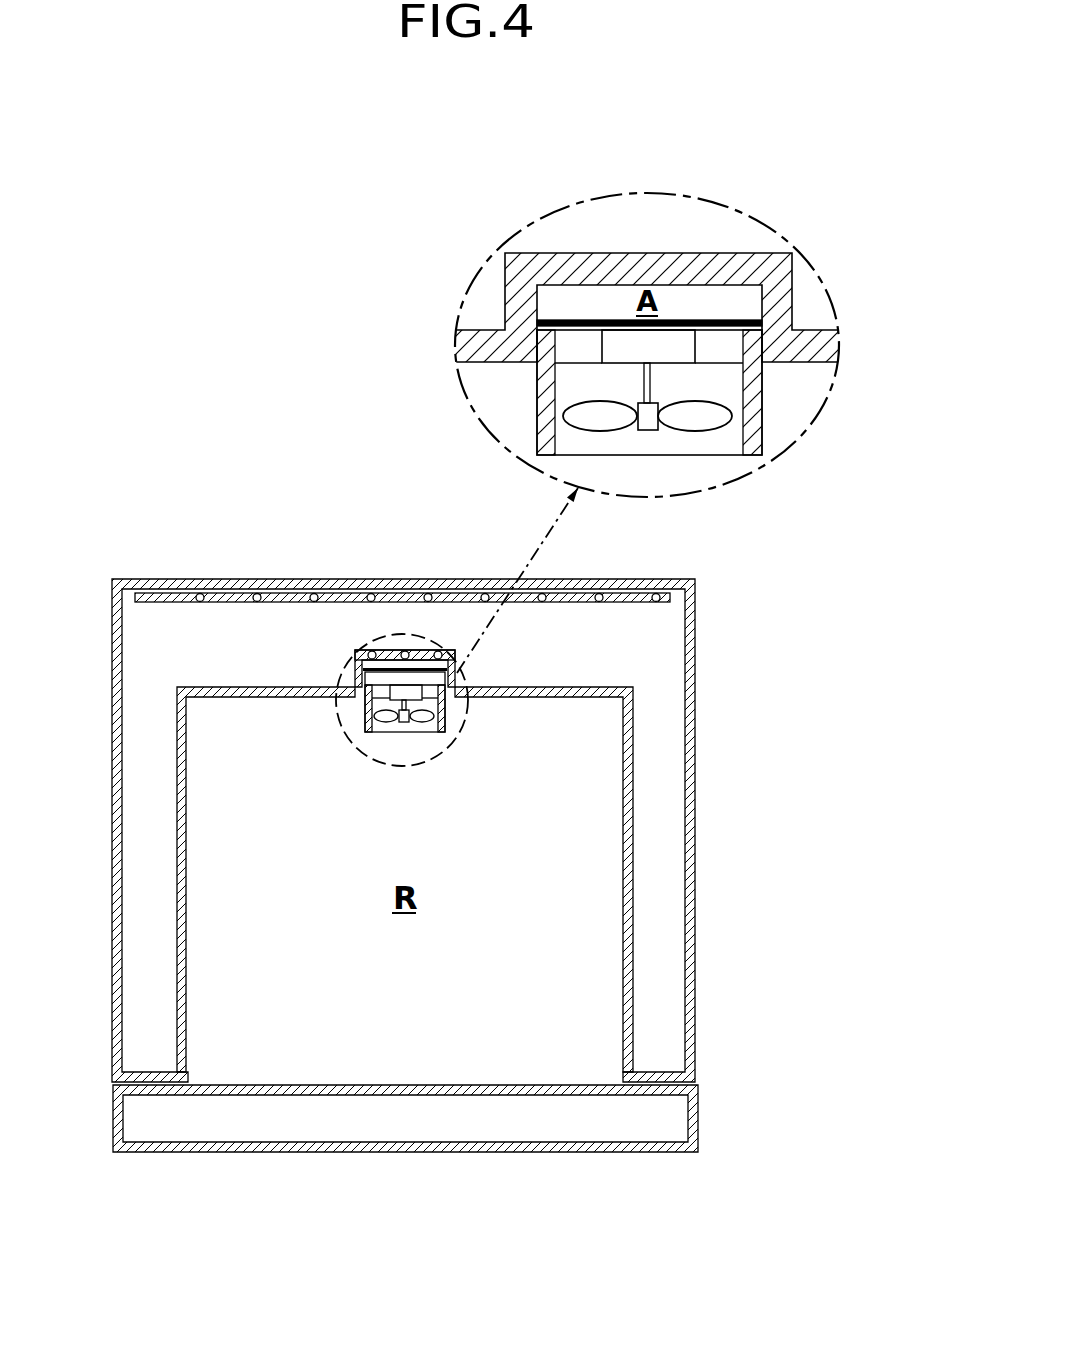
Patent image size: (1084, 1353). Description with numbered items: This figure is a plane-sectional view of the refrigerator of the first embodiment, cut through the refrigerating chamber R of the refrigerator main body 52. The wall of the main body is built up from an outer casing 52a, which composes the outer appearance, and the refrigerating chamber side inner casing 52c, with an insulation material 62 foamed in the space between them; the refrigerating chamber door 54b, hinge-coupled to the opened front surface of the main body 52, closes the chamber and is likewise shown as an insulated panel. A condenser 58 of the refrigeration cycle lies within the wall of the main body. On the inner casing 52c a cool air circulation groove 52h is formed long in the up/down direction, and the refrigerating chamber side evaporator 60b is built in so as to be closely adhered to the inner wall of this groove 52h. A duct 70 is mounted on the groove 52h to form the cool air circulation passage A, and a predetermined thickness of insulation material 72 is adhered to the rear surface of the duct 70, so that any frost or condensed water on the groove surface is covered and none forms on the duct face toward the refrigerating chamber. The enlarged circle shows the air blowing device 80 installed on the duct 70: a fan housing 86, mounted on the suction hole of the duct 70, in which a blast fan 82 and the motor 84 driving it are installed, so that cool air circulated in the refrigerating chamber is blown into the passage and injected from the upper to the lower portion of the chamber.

The refrigerator main body 52 is at (469, 793).
The outer casing 52a is at (688, 800).
The refrigerating chamber side inner casing 52c is at (628, 855).
The cool air circulation groove 52h is at (417, 648).
The refrigerating chamber door 54b is at (398, 1128).
The condenser 58 is at (288, 590).
The refrigerating chamber side evaporator 60b is at (383, 648).
The insulation material 62 is at (670, 932).
The duct 70 is at (732, 355).
The insulation material 72 is at (733, 323).
The air blowing device 80 is at (532, 399).
The blast fan 82 is at (573, 417).
The motor 84 is at (610, 362).
The fan housing 86 is at (540, 365).